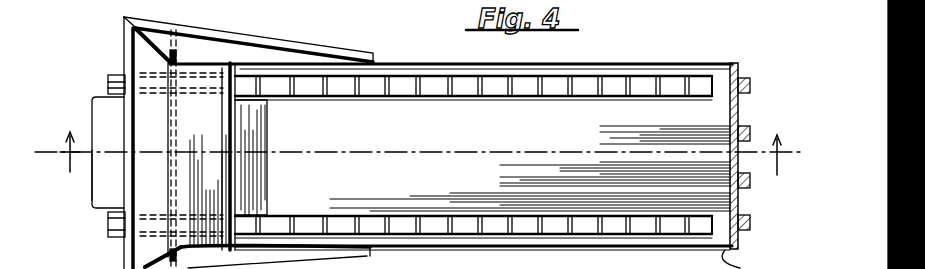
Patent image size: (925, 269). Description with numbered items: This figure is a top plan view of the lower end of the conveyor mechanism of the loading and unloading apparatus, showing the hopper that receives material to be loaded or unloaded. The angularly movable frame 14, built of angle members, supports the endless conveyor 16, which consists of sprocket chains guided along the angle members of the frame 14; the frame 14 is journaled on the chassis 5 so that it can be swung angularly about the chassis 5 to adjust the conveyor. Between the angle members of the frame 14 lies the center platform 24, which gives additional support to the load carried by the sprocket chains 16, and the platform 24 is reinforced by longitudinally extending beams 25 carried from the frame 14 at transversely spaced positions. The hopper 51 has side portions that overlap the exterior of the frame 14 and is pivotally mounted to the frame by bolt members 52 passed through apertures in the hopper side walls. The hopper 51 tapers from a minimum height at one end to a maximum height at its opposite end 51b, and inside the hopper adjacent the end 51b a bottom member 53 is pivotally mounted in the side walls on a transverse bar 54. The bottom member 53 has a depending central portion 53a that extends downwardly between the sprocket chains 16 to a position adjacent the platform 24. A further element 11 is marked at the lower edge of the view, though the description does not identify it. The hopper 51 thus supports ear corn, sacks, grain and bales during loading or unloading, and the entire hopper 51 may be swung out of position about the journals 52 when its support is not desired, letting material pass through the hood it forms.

The chassis 5 is at (423, 153).
The tubular housing 11 is at (451, 166).
The angularly movable frame 14 is at (726, 64).
The endless conveyor 16 is at (408, 90).
The center platform 24 is at (735, 198).
The longitudinally extending beams 25 is at (750, 131).
The hopper 51 is at (255, 58).
The maximum height end of hopper 51b is at (145, 170).
The bolt members 52 is at (128, 54).
The bottom member 53 is at (185, 125).
The depending central portion 53a is at (253, 122).
The transverse bar 54 is at (180, 57).